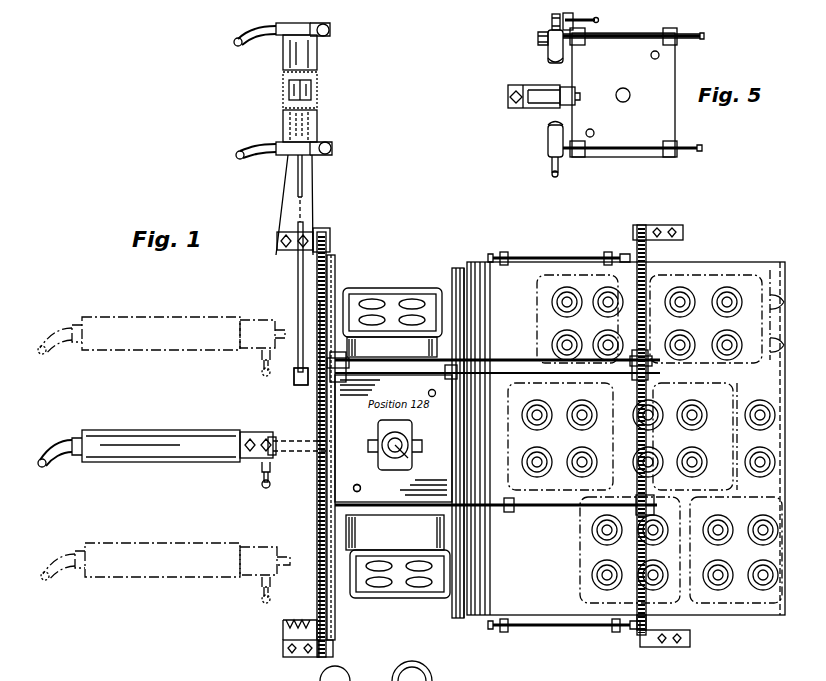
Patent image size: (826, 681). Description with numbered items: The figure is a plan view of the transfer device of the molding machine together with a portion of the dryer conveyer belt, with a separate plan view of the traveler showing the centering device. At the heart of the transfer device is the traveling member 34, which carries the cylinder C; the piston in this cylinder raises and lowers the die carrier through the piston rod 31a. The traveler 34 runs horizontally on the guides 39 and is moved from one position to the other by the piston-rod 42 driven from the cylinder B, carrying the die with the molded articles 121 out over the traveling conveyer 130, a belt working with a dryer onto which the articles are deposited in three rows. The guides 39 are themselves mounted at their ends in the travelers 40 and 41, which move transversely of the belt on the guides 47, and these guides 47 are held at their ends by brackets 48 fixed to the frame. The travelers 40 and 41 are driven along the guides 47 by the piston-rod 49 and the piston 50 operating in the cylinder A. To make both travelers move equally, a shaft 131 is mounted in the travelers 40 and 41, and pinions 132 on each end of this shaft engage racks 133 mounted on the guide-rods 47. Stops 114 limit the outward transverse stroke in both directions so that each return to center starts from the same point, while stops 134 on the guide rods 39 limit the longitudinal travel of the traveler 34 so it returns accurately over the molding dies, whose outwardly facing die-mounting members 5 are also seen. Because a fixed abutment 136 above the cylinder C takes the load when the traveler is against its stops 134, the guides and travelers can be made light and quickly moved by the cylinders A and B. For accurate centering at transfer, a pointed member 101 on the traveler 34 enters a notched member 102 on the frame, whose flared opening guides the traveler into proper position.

In FIG. 1, the cylinder A is at (300, 127).
In FIG. 1, the cylinder B is at (175, 337).
In FIG. 1, the cylinder C is at (412, 432).
In FIG. 1, the die-mounting members 5 is at (395, 288).
In FIG. 1, the piston rod 31a is at (412, 452).
In FIG. 1, the traveling member 34 is at (525, 290).
In FIG. 5, the traveling member 34 is at (665, 122).
In FIG. 1, the guides 39 is at (520, 258).
In FIG. 5, the guides 39 is at (648, 33).
In FIG. 1, the traveler 40 is at (656, 503).
In FIG. 1, the traveler 41 is at (327, 520).
In FIG. 5, the traveler 41 is at (540, 97).
In FIG. 1, the piston-rod 42 is at (294, 436).
In FIG. 1, the guides 47 is at (317, 598).
In FIG. 5, the guides 47 is at (560, 168).
In FIG. 1, the brackets 48 is at (318, 236).
In FIG. 1, the piston-rod 49 is at (298, 282).
In FIG. 1, the piston 50 is at (302, 92).
In FIG. 5, the pointed member 101 is at (555, 96).
In FIG. 5, the notched member 102 is at (530, 106).
In FIG. 1, the stops 114 is at (330, 248).
In FIG. 1, the molded articles 121 is at (752, 530).
In FIG. 1, the traveling conveyer 130 is at (465, 598).
In FIG. 1, the shaft 131 is at (455, 355).
In FIG. 5, the shaft 131 is at (598, 20).
In FIG. 1, the pinions 132 is at (340, 358).
In FIG. 5, the pinions 132 is at (551, 20).
In FIG. 1, the racks 133 is at (328, 282).
In FIG. 1, the stops 134 is at (310, 395).
In FIG. 1, the fixed abutment 136 is at (396, 671).